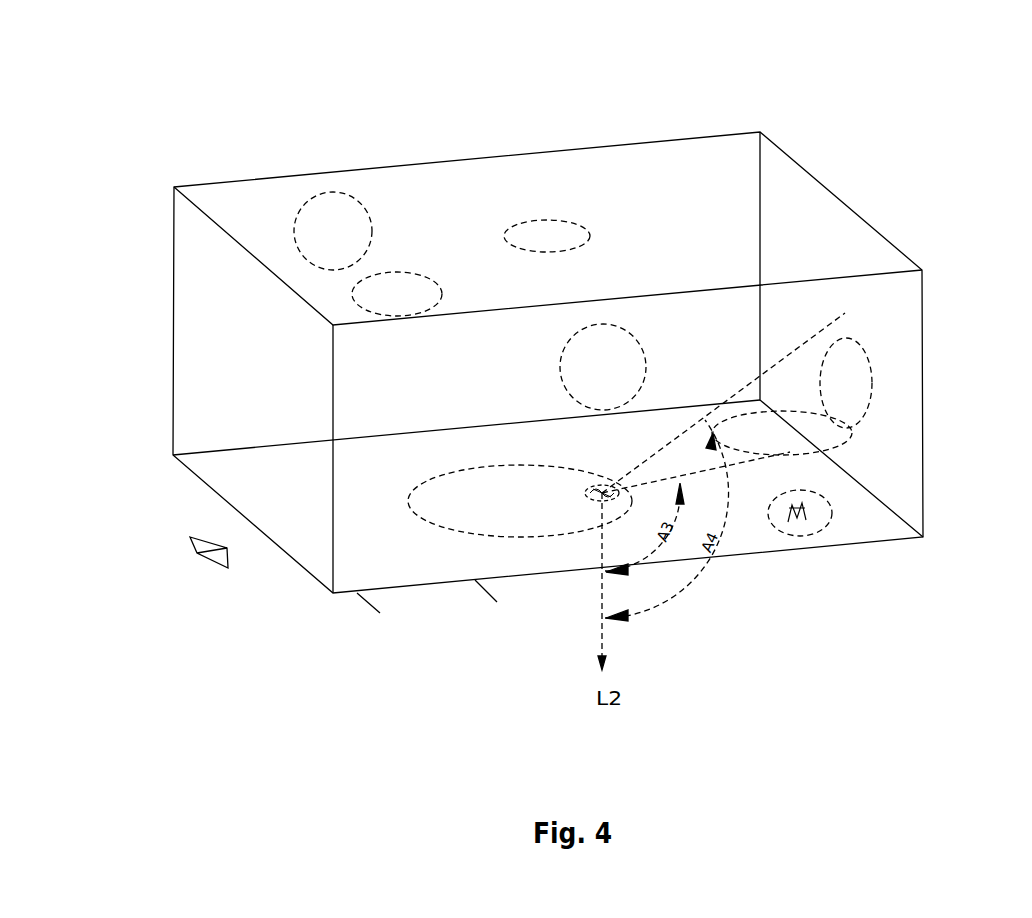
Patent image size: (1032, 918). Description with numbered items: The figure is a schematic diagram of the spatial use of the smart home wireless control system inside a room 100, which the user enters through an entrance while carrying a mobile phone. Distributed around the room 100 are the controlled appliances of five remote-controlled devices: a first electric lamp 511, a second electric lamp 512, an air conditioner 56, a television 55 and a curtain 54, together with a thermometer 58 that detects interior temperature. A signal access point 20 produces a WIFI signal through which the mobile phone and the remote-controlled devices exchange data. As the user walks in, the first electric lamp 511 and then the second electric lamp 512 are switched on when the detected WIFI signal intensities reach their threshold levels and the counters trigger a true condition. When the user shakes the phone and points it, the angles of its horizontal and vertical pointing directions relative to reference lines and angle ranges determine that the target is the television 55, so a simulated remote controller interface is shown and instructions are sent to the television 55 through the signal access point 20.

The room 100 is at (174, 187).
The curtain 54 is at (320, 192).
The first electric lamp 511 is at (355, 305).
The second electric lamp 512 is at (546, 195).
The air conditioner 56 is at (623, 325).
The television 55 is at (918, 392).
The thermometer 58 is at (745, 408).
The signal access point 20 is at (803, 532).